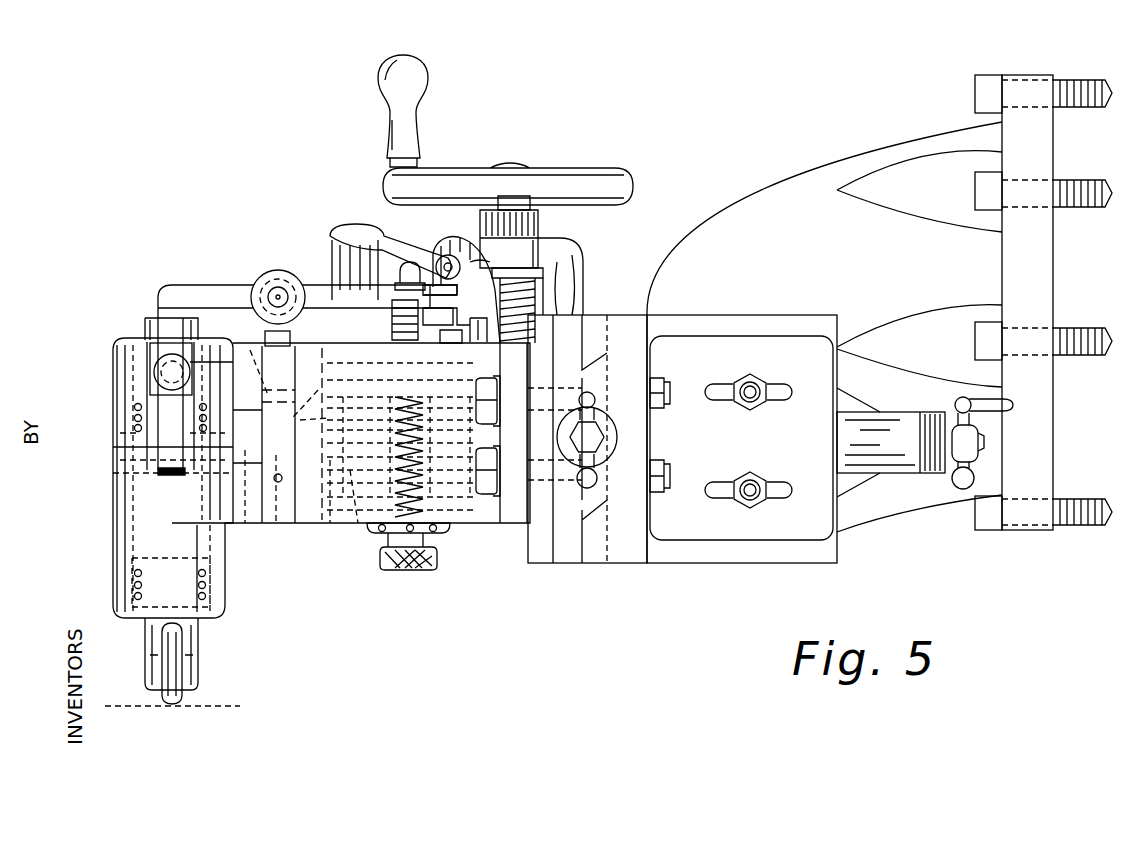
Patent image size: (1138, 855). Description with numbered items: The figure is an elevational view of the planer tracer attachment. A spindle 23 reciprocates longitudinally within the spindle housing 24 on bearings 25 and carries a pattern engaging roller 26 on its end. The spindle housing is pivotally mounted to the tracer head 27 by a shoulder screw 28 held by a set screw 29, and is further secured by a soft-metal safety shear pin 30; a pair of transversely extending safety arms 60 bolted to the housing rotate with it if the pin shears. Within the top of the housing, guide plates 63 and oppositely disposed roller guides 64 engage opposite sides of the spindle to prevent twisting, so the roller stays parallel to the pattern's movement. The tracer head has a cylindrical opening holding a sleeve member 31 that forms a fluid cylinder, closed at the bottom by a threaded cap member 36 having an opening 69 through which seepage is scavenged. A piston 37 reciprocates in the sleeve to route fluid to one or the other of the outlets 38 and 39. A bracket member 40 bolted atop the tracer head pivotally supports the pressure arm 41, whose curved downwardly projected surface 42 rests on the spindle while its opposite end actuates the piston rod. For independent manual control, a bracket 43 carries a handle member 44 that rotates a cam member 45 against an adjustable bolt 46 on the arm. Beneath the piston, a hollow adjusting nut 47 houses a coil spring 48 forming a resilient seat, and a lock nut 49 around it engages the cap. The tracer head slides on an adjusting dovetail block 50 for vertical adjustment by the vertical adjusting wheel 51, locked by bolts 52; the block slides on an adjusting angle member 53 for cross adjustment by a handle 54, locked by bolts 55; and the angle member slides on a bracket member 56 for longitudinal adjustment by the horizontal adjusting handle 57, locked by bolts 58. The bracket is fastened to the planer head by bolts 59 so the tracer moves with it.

The spindle 23 is at (140, 318).
The spindle housing 24 is at (125, 340).
The bearings 25 is at (134, 418).
The pattern engaging roller 26 is at (185, 692).
The tracer head 27 is at (300, 520).
The shoulder screw 28 is at (244, 525).
The set screw 29 is at (276, 525).
The safety shear pin 30 is at (278, 368).
The sleeve member 31 is at (353, 566).
The cap member 36 is at (478, 510).
The piston 37 is at (380, 390).
The outlet 38 is at (328, 240).
The outlet 39 is at (470, 250).
The bracket member 40 is at (262, 280).
The pressure arm 41 is at (197, 290).
The curved downwardly projected surface 42 is at (158, 308).
The bracket 43 is at (488, 266).
The handle member 44 is at (356, 230).
The cam member 45 is at (450, 236).
The adjustable bolt 46 is at (408, 340).
The hollow adjusting nut 47 is at (408, 572).
The coil spring 48 is at (452, 532).
The lock nut 49 is at (445, 540).
The adjusting dovetail block 50 is at (550, 563).
The vertical adjusting wheel 51 is at (590, 158).
The bolts 52 is at (504, 400).
The adjusting angle member 53 is at (635, 563).
The handle 54 is at (606, 437).
The bolts 55 is at (674, 382).
The bracket member 56 is at (760, 205).
The horizontal adjusting handle 57 is at (1013, 406).
The bolts 58 is at (762, 430).
The bolts 59 is at (975, 98).
The safety arms 60 is at (118, 470).
The guide plates 63 is at (154, 376).
The roller guides 64 is at (152, 396).
The opening 69 is at (330, 540).